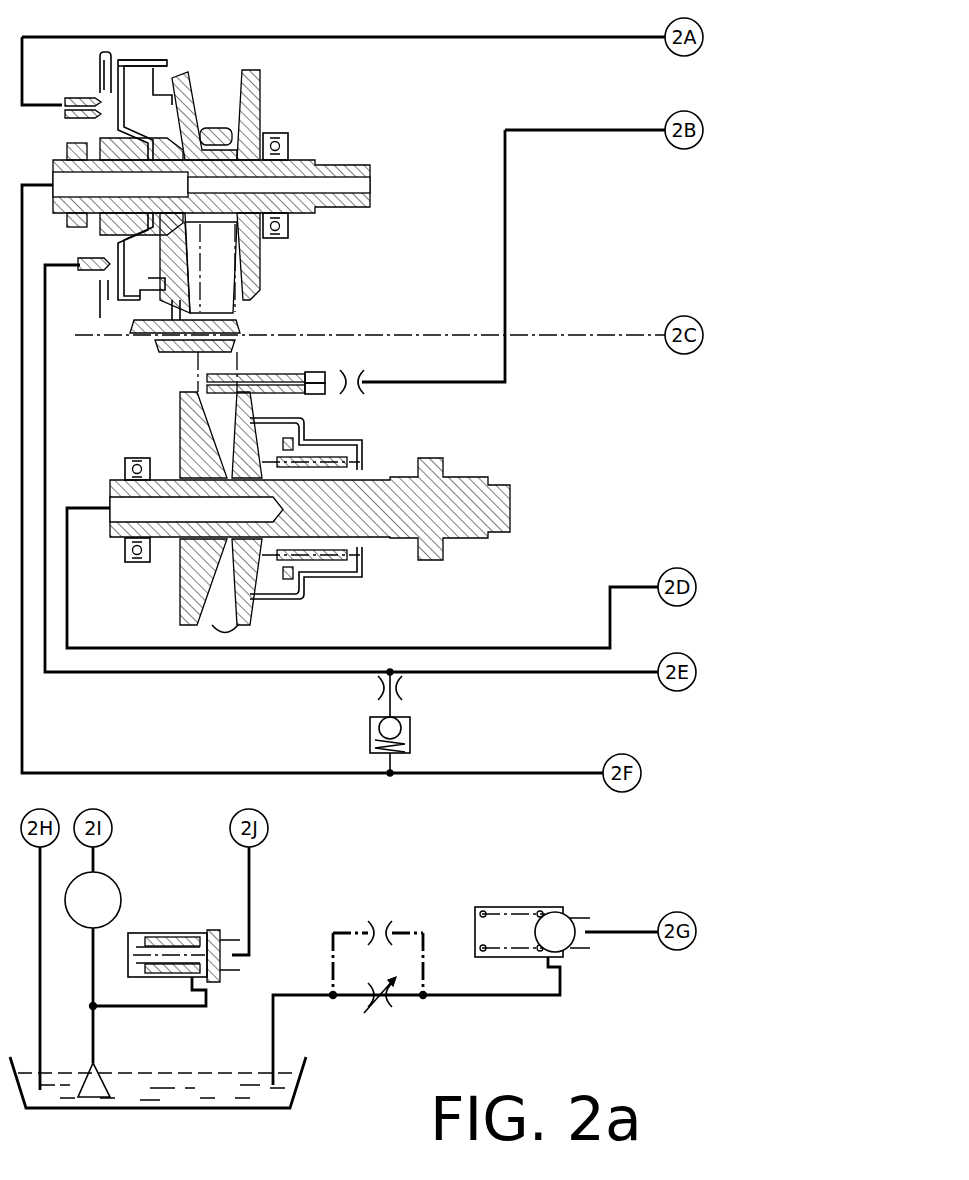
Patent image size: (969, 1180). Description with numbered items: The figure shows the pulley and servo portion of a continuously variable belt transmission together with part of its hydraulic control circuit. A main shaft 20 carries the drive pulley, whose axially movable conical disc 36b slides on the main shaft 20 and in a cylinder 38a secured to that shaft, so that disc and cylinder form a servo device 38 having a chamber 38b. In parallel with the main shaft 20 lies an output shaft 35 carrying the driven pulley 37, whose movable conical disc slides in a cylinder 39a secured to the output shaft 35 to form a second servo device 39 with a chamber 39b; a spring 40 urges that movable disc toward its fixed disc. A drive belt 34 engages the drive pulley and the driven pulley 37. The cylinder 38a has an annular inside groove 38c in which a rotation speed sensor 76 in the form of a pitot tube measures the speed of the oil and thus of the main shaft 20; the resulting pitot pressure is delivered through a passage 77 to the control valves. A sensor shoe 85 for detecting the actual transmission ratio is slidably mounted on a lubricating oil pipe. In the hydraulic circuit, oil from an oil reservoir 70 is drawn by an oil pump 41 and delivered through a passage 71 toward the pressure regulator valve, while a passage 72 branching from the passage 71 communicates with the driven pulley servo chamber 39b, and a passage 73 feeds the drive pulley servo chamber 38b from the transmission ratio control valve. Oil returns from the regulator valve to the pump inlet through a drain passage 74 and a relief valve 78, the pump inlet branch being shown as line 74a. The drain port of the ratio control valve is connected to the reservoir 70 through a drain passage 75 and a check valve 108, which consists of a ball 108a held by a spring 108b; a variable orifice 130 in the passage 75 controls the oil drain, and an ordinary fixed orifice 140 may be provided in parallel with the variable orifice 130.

The main shaft 20 is at (310, 162).
The drive belt 34 is at (232, 118).
The output shaft 35 is at (490, 512).
The movable conical disc 36b is at (189, 97).
The driven pulley 37 is at (247, 621).
The servo device 38 is at (174, 53).
The cylinder 38a is at (150, 58).
The chamber 38b is at (160, 131).
The annular inside groove 38c is at (98, 61).
The servo device 39 is at (375, 560).
The cylinder 39a is at (304, 592).
The chamber 39b is at (280, 442).
The spring 40 is at (352, 450).
The oil pump 41 is at (123, 903).
The oil reservoir 70 is at (102, 1110).
The passage 71 is at (96, 866).
The passage 72 is at (505, 628).
The passage 73 is at (538, 752).
The drain passage 74 is at (253, 903).
The return line 74a is at (45, 893).
The drain passage 75 is at (640, 930).
The rotation speed sensor 76 is at (97, 78).
The passage 77 is at (447, 15).
The relief valve 78 is at (182, 908).
The sensor shoe 85 is at (228, 311).
The check valve 108 is at (556, 924).
The ball 108a is at (562, 958).
The spring 108b is at (497, 908).
The variable orifice 130 is at (376, 1000).
The fixed orifice 140 is at (395, 900).